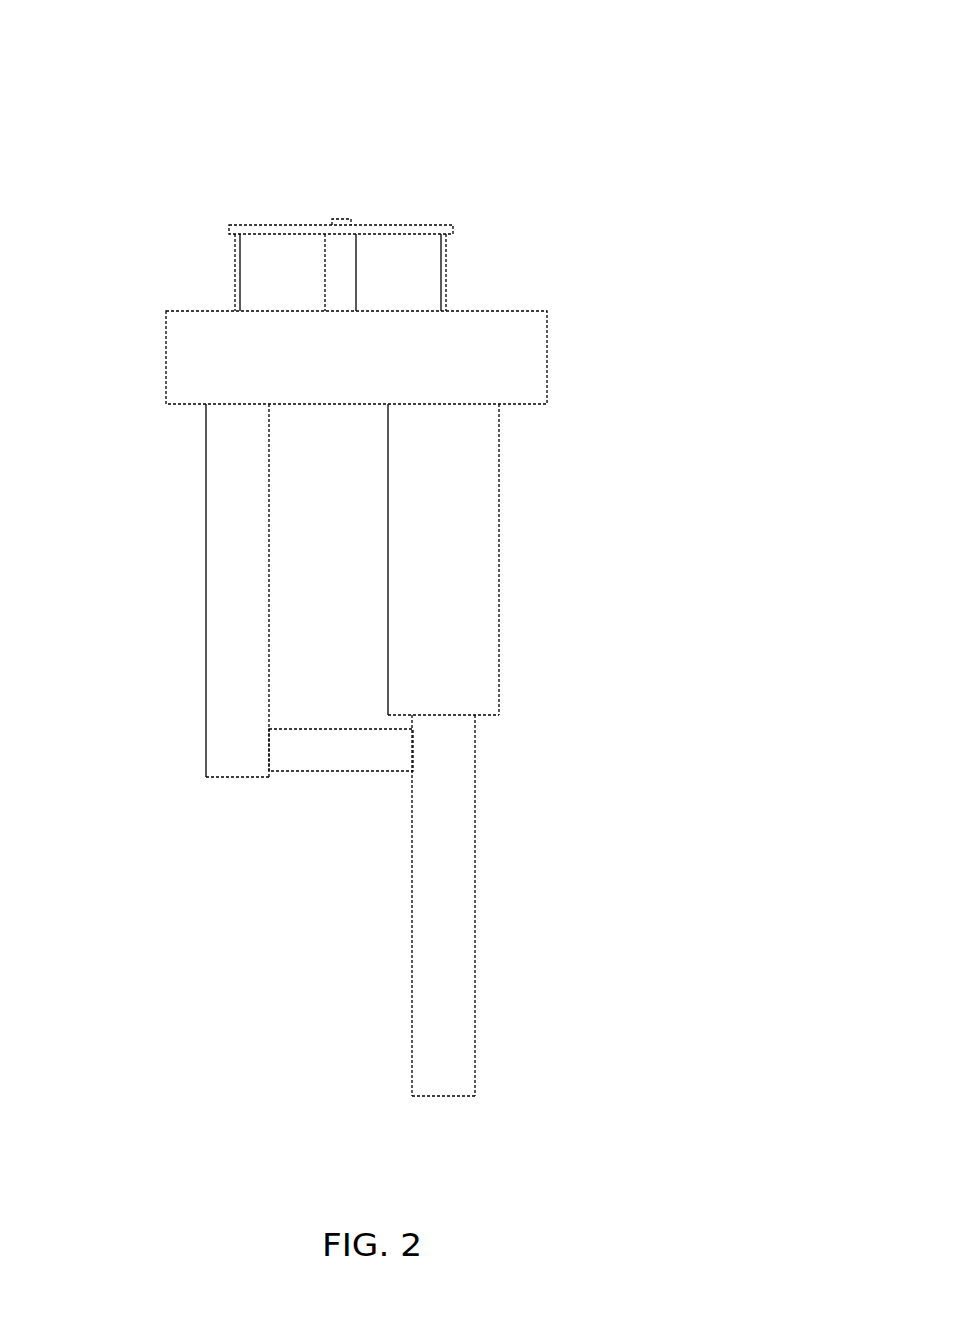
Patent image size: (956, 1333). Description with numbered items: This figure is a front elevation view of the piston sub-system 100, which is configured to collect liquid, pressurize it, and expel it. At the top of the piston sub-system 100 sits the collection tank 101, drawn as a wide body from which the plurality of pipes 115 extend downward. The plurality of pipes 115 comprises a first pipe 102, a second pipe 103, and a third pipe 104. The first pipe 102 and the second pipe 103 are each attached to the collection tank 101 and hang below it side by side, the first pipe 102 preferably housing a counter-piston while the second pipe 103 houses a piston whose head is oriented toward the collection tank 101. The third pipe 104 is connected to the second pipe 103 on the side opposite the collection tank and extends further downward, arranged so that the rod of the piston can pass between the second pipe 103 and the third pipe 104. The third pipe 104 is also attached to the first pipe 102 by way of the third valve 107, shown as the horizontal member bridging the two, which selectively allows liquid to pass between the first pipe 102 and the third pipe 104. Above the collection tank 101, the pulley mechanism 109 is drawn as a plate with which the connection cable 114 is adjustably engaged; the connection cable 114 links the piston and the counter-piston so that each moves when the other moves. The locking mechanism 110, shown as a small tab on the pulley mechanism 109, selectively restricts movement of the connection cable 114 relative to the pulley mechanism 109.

The piston sub-system 100 is at (487, 104).
The collection tank 101 is at (535, 368).
The first pipe 102 is at (220, 573).
The second pipe 103 is at (482, 552).
The third pipe 104 is at (467, 898).
The third valve 107 is at (343, 760).
The pulley mechanism 109 is at (270, 230).
The locking mechanism 110 is at (342, 220).
The connection cable 114 is at (236, 289).
The plurality of pipes 115 is at (362, 750).